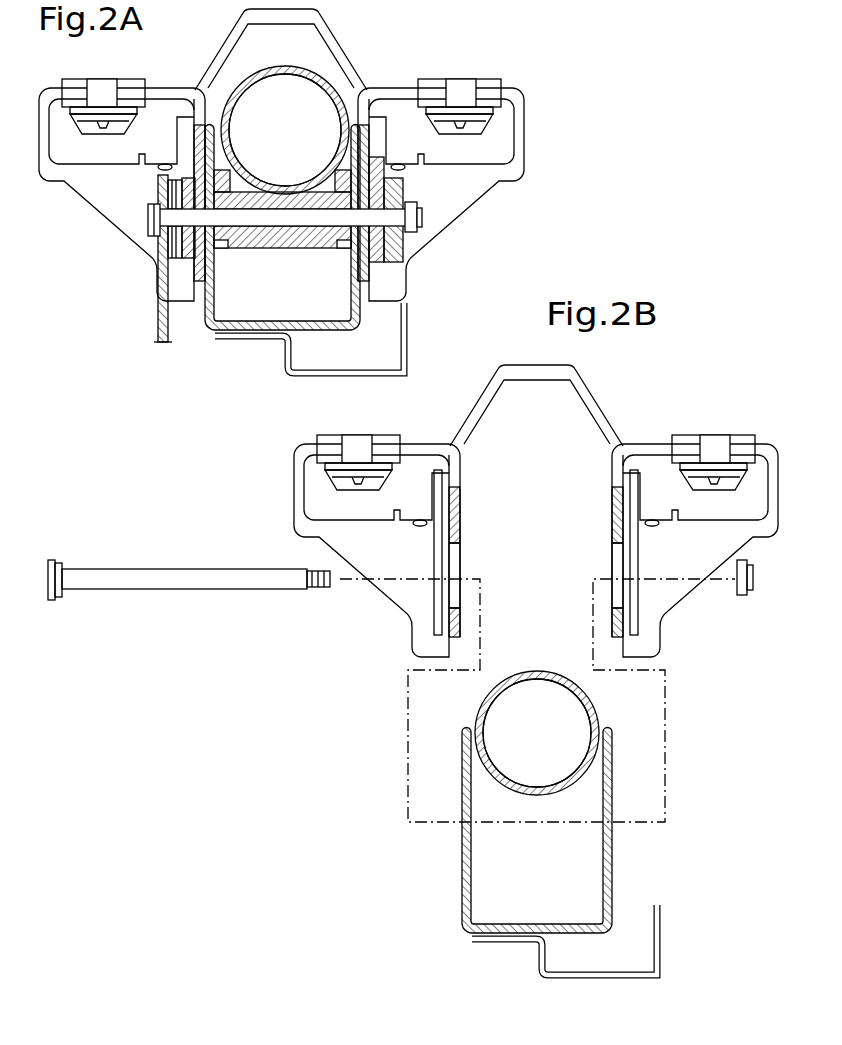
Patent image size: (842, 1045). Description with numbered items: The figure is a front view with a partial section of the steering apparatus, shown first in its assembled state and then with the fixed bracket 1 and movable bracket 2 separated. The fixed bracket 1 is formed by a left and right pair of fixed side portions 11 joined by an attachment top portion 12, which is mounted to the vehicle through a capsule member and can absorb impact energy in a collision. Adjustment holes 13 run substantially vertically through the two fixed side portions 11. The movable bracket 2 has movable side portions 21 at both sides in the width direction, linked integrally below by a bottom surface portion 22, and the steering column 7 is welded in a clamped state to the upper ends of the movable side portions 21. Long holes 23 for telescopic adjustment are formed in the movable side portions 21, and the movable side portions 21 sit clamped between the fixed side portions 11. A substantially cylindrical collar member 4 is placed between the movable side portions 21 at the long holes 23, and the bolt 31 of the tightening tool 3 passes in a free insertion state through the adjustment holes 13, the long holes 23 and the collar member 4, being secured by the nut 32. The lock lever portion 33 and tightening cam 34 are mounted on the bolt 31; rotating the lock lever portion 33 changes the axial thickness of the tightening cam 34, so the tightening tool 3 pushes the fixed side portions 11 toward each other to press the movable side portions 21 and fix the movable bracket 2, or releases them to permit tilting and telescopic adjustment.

In FIG. 2A, the fixed bracket 1 is at (402, 89).
In FIG. 2B, the fixed bracket 1 is at (655, 439).
In FIG. 2A, the movable bracket 2 is at (293, 270).
In FIG. 2B, the movable bracket 2 is at (541, 829).
In FIG. 2A, the tightening tool 3 is at (260, 242).
In FIG. 2A, the collar member 4 is at (299, 250).
In FIG. 2A, the steering column 7 is at (275, 77).
In FIG. 2B, the steering column 7 is at (541, 673).
In FIG. 2A, the fixed side portion 11 is at (197, 153).
In FIG. 2B, the fixed side portion 11 is at (461, 520).
In FIG. 2A, the attachment top portion 12 is at (339, 49).
In FIG. 2B, the attachment top portion 12 is at (590, 390).
In FIG. 2A, the adjustment hole 13 is at (206, 241).
In FIG. 2B, the adjustment hole 13 is at (460, 572).
In FIG. 2A, the movable side portion 21 is at (206, 310).
In FIG. 2B, the movable side portion 21 is at (462, 863).
In FIG. 2A, the bottom surface portion 22 is at (320, 341).
In FIG. 2B, the bottom surface portion 22 is at (572, 926).
In FIG. 2A, the long hole for telescopic adjustment 23 is at (233, 204).
In FIG. 2B, the long hole for telescopic adjustment 23 is at (461, 823).
In FIG. 2A, the bolt 31 is at (271, 227).
In FIG. 2B, the bolt 31 is at (172, 578).
In FIG. 2A, the nut 32 is at (414, 204).
In FIG. 2B, the nut 32 is at (753, 590).
In FIG. 2A, the lock lever portion 33 is at (158, 316).
In FIG. 2A, the tightening cam 34 is at (190, 174).